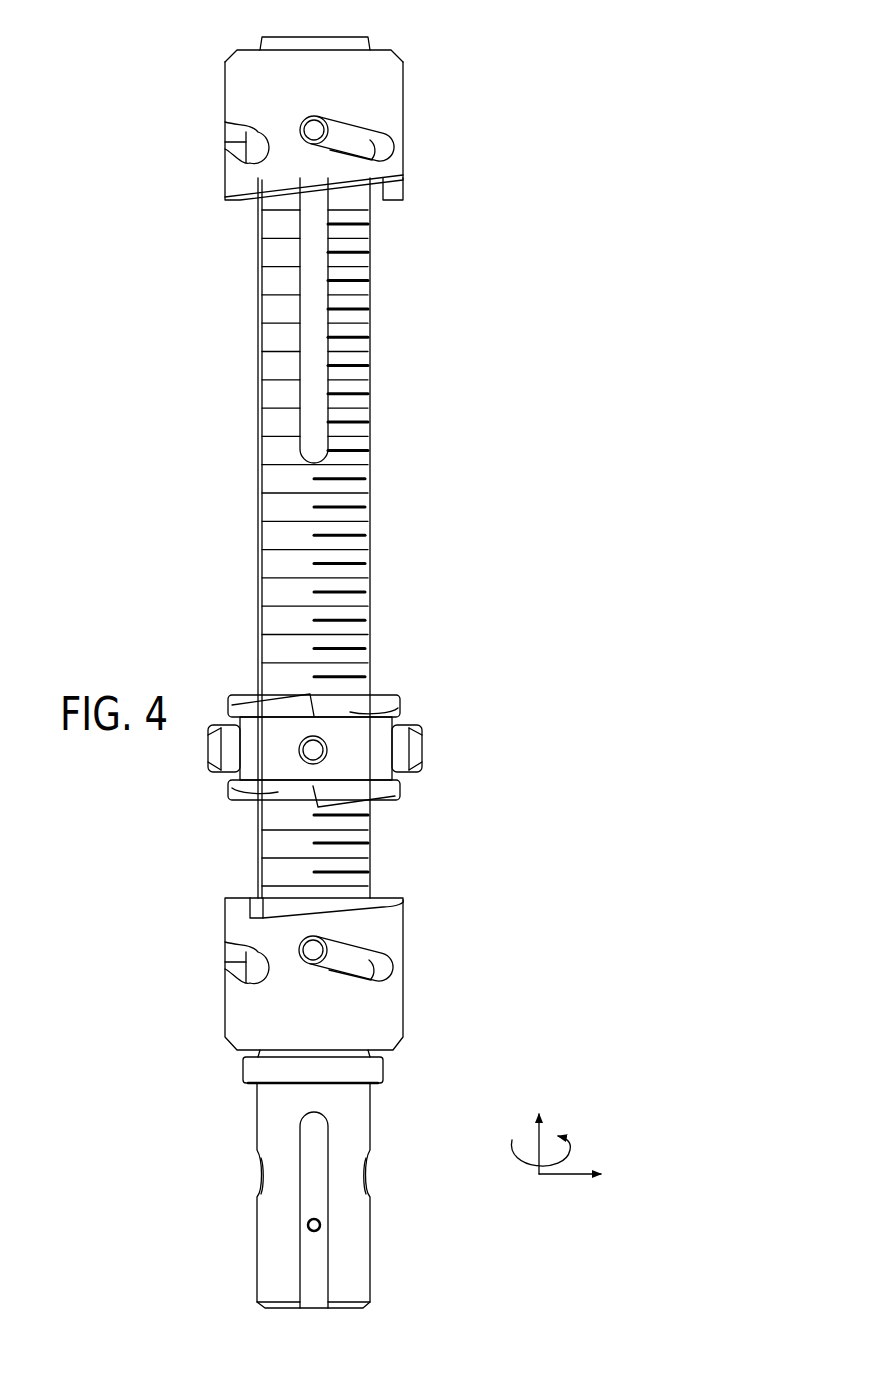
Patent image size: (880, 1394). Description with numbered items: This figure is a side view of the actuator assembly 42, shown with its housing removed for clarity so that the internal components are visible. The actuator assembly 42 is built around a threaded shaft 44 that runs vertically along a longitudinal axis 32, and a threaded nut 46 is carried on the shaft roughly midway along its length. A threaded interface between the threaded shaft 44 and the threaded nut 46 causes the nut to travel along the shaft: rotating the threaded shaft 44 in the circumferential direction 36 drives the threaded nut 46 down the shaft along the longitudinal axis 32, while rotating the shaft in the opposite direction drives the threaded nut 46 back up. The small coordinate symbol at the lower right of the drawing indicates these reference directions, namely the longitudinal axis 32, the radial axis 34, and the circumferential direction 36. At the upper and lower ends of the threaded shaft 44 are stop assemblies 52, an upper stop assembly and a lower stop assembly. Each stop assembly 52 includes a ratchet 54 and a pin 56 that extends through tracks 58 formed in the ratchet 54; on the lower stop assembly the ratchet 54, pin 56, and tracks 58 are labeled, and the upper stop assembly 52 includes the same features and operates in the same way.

The longitudinal axis 32 is at (545, 1137).
The radial axis 34 is at (562, 1177).
The circumferential axis 36 is at (515, 1164).
The actuator assembly 42 is at (440, 63).
The threaded shaft 44 is at (350, 553).
The threaded nut 46 is at (340, 797).
The stop assembly 52 is at (341, 536).
The ratchet 54 is at (387, 1000).
The pin 56 is at (313, 950).
The tracks 58 is at (378, 968).